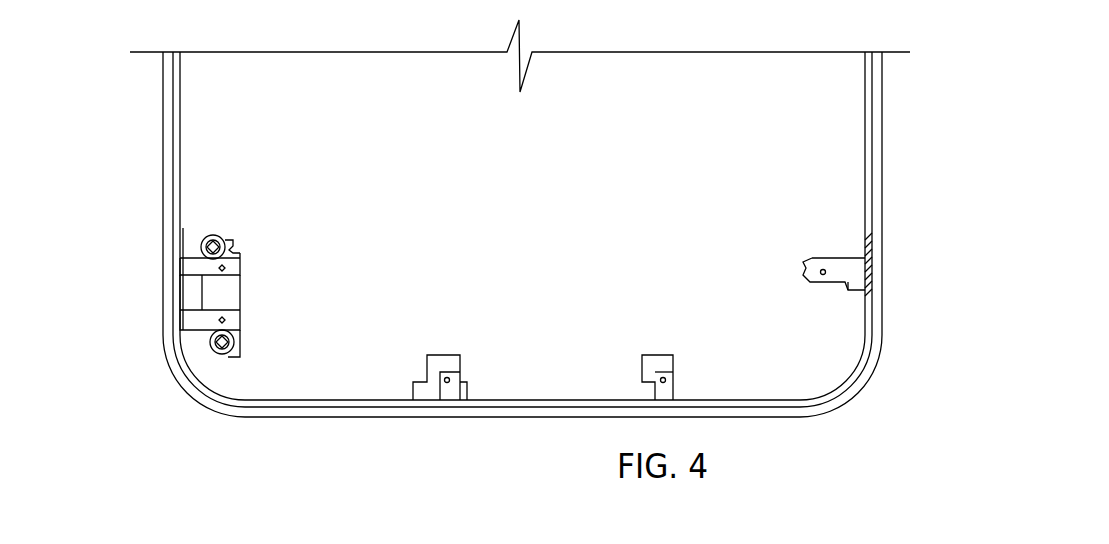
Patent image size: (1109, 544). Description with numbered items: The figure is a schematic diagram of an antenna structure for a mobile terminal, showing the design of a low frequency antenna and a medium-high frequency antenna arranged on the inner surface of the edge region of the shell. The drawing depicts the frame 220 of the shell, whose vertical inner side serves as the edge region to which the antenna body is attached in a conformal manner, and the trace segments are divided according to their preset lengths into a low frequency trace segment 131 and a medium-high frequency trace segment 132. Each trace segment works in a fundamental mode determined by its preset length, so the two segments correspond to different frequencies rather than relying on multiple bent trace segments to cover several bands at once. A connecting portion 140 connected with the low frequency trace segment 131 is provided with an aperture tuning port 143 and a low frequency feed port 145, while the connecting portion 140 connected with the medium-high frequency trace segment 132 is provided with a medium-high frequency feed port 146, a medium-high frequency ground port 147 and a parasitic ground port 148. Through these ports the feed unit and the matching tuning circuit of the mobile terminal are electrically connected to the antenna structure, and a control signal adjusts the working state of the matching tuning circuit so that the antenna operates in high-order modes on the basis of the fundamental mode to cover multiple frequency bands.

The low frequency trace segment 131 is at (173, 289).
The medium-high frequency trace segment 132 is at (873, 182).
The connecting portion 140 is at (860, 277).
The aperture tuning port 143 is at (238, 261).
The low frequency feed port 145 is at (238, 316).
The medium-high frequency feed port 146 is at (668, 360).
The medium-high frequency ground port 147 is at (803, 270).
The parasitic ground port 148 is at (462, 360).
The frame 220 is at (870, 362).